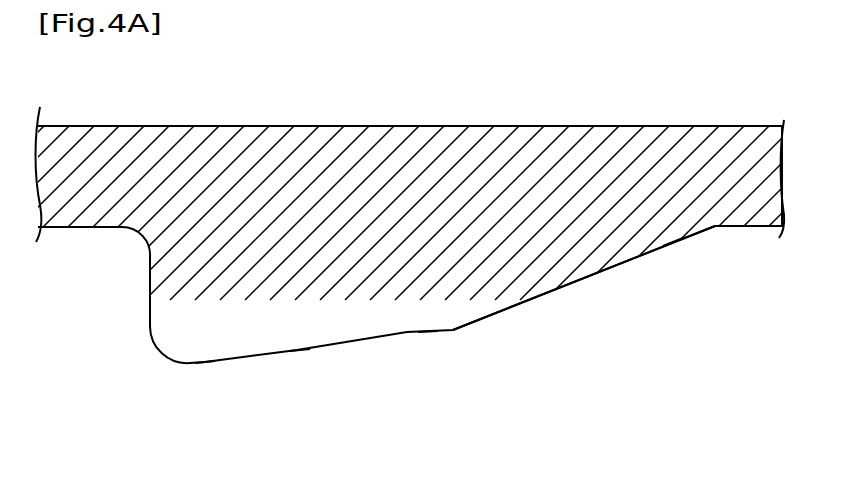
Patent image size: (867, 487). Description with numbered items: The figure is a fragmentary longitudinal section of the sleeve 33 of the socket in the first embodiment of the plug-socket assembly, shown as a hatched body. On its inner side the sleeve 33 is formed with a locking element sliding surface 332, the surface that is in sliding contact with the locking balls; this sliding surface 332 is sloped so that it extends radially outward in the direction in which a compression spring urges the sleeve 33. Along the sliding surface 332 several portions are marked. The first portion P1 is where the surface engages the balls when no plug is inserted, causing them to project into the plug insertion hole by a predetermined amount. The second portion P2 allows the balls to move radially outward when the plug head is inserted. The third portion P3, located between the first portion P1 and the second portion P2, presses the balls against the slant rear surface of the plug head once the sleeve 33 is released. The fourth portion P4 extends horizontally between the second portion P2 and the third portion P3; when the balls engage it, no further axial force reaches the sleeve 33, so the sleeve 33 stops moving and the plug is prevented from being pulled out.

The sleeve 33 is at (255, 147).
The locking element sliding surface 332 is at (528, 302).
The first portion P1 is at (210, 363).
The second portion P2 is at (673, 242).
The third portion P3 is at (305, 350).
The fourth portion P4 is at (428, 332).